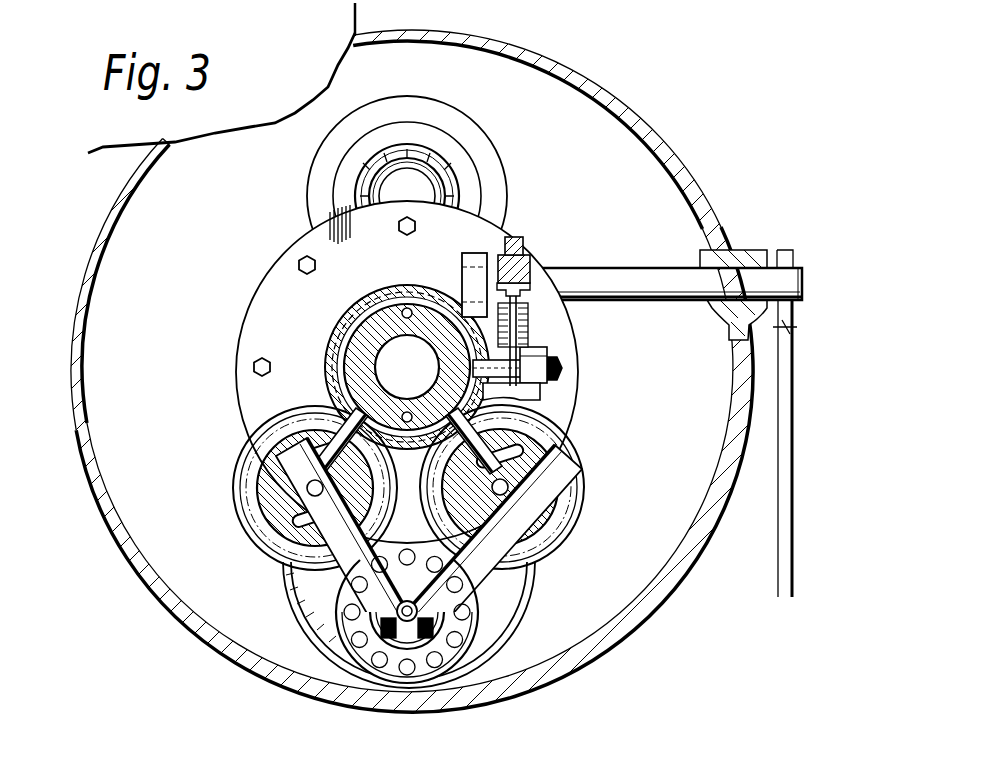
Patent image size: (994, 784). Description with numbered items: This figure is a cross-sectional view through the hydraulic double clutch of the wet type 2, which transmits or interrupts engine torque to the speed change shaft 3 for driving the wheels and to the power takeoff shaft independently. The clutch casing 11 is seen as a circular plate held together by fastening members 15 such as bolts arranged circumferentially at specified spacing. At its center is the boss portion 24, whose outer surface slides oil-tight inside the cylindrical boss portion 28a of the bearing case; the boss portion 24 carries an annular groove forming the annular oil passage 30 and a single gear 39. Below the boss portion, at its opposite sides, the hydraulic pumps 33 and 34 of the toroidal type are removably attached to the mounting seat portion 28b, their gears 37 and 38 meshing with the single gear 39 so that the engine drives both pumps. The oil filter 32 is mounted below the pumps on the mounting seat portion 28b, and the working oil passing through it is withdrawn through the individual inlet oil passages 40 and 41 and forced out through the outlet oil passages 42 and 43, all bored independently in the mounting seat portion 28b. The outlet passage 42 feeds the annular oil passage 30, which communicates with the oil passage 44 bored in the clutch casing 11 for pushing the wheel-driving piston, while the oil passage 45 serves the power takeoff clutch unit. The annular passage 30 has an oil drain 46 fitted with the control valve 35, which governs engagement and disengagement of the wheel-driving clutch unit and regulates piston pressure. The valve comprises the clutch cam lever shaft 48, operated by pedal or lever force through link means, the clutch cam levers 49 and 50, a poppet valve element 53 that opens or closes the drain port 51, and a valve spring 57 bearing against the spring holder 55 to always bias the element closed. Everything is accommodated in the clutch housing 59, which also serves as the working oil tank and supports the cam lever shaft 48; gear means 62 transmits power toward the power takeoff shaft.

The hydraulic double clutch of the wet type 2 is at (255, 263).
The speed change shaft 3 is at (417, 188).
The clutch casing 11 is at (252, 303).
The fastening members 15 is at (304, 259).
The boss portion 24 is at (346, 361).
The cylindrical boss portion 28a is at (357, 315).
The mounting seat portion 28b is at (292, 601).
The front circumferential annular groove 30 is at (375, 301).
The oil filter 32 is at (338, 631).
The hydraulic pump 33 is at (278, 491).
The hydraulic pump 34 is at (548, 489).
The control valve 35 is at (543, 321).
The gear 37 is at (244, 453).
The gear 38 is at (576, 451).
The single gear 39 is at (333, 329).
The inlet oil passage 40 is at (298, 581).
The inlet oil passage 41 is at (512, 613).
The outlet oil passage 42 is at (318, 413).
The outlet oil passage 43 is at (470, 431).
The oil passage 44 is at (409, 308).
The oil passage 45 is at (408, 413).
The oil drain 46 is at (414, 414).
The clutch cam lever shaft 48 is at (674, 301).
The clutch cam lever 49 is at (531, 265).
The clutch cam lever 50 is at (516, 243).
The drain port 51 is at (540, 393).
The poppet valve element 53 is at (560, 369).
The spring holder 55 is at (490, 255).
The valve spring 57 is at (548, 358).
The clutch housing 59 is at (668, 571).
The gear means 62 is at (545, 580).